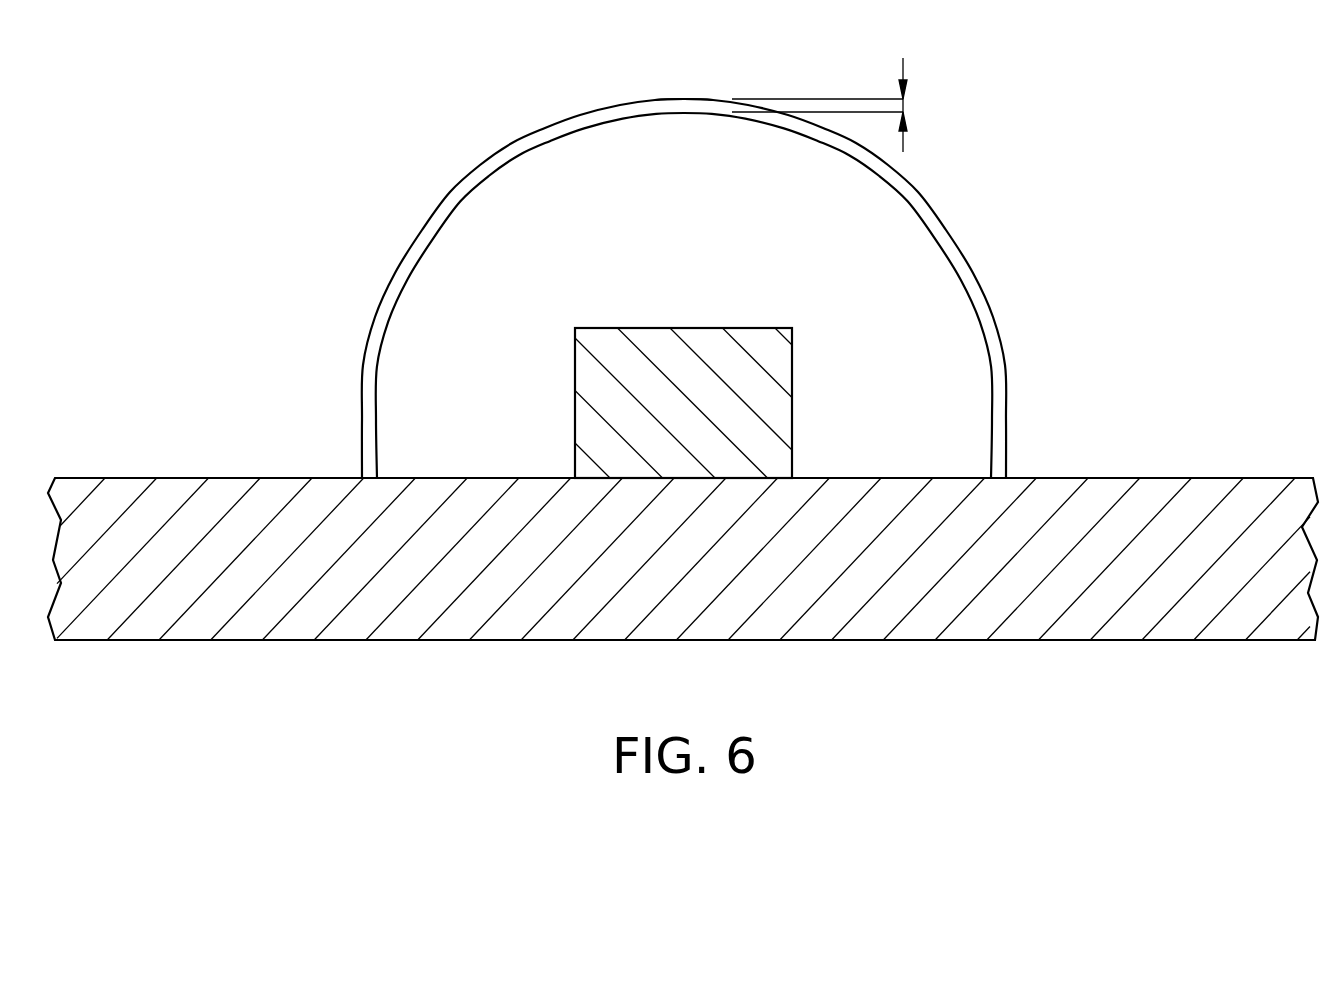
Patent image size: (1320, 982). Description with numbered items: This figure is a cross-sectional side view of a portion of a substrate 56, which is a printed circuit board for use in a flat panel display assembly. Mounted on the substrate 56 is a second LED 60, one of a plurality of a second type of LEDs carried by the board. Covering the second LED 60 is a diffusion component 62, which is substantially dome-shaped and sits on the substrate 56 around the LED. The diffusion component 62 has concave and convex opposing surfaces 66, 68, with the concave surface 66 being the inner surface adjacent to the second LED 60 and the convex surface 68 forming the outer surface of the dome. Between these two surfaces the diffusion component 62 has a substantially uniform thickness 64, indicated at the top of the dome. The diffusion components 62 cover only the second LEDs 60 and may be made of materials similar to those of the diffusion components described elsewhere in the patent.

The substrate 56 is at (147, 478).
The second LED 60 is at (658, 335).
The diffusion component 62 is at (514, 142).
The thickness 64 is at (905, 105).
The concave surface 66 is at (991, 370).
The convex surface 68 is at (688, 99).